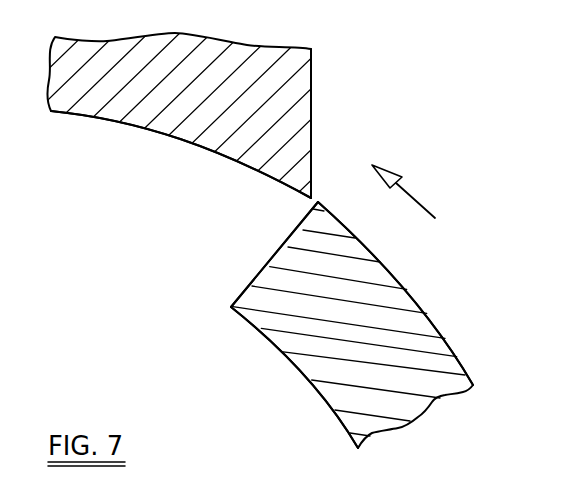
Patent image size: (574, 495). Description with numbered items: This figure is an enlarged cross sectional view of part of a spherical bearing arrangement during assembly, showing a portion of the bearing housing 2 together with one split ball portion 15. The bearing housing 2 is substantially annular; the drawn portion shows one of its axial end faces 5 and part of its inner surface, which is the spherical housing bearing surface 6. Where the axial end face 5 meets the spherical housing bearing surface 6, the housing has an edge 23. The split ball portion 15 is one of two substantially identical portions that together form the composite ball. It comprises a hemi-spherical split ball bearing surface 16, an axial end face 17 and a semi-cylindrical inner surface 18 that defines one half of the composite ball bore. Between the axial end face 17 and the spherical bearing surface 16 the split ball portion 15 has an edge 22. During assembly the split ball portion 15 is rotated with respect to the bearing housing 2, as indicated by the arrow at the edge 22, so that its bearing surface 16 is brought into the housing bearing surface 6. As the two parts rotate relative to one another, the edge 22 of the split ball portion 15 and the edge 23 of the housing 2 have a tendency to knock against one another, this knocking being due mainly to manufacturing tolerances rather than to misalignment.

The bearing housing 2 is at (298, 82).
The axial end face 5 is at (312, 128).
The spherical housing bearing surface 6 is at (117, 116).
The edge 23 is at (309, 198).
The split ball portion 15 is at (363, 272).
The hemi-spherical split ball bearing surface 16 is at (440, 325).
The axial end face 17 is at (262, 270).
The semi-cylindrical inner surface 18 is at (285, 352).
The edge 22 is at (319, 197).